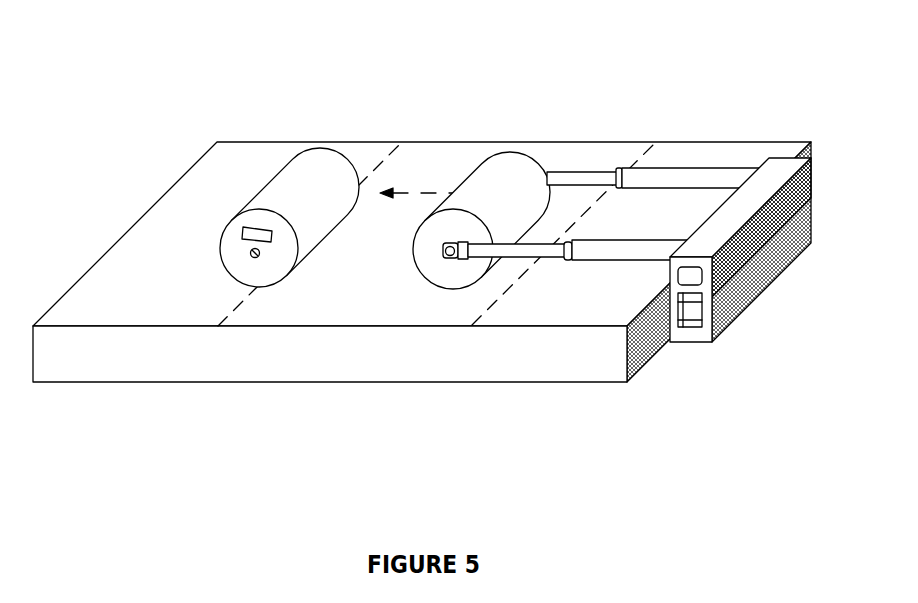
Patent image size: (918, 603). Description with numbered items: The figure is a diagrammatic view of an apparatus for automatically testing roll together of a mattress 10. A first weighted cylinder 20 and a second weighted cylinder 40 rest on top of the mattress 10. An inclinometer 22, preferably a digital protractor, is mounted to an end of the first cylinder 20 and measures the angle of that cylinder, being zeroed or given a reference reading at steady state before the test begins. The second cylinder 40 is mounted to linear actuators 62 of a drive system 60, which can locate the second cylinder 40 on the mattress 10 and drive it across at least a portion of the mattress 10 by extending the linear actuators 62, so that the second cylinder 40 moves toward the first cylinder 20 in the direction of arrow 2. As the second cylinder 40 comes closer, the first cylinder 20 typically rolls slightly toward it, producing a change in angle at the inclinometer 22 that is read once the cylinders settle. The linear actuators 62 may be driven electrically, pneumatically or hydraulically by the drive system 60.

The mattress 10 is at (133, 353).
The first weighted cylinder 20 is at (312, 215).
The inclinometer 22 is at (243, 228).
The arrow 2 is at (430, 193).
The second weighted cylinder 40 is at (522, 205).
The drive system 60 is at (682, 168).
The linear actuators 62 is at (778, 158).